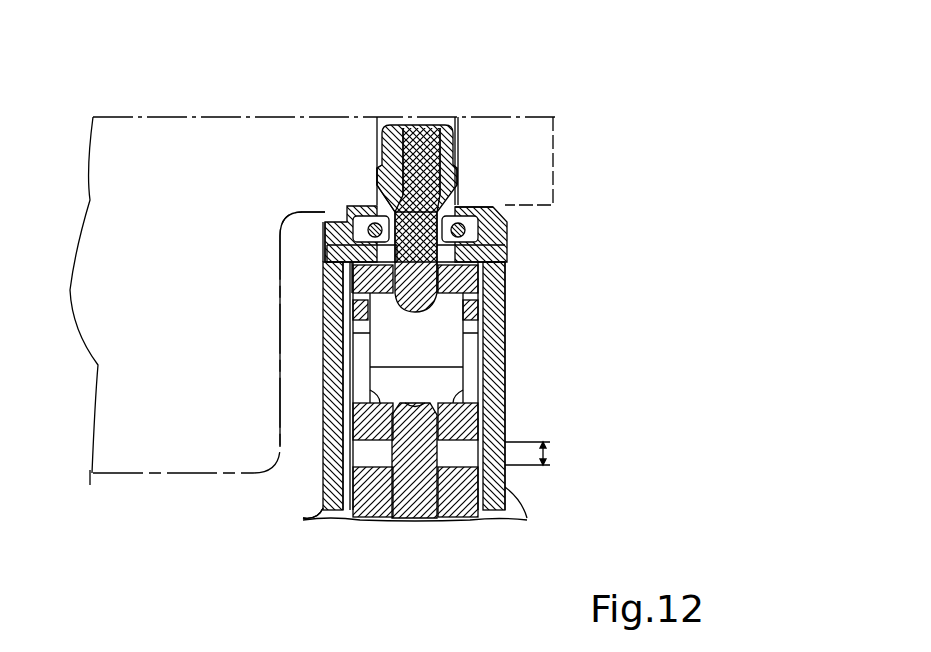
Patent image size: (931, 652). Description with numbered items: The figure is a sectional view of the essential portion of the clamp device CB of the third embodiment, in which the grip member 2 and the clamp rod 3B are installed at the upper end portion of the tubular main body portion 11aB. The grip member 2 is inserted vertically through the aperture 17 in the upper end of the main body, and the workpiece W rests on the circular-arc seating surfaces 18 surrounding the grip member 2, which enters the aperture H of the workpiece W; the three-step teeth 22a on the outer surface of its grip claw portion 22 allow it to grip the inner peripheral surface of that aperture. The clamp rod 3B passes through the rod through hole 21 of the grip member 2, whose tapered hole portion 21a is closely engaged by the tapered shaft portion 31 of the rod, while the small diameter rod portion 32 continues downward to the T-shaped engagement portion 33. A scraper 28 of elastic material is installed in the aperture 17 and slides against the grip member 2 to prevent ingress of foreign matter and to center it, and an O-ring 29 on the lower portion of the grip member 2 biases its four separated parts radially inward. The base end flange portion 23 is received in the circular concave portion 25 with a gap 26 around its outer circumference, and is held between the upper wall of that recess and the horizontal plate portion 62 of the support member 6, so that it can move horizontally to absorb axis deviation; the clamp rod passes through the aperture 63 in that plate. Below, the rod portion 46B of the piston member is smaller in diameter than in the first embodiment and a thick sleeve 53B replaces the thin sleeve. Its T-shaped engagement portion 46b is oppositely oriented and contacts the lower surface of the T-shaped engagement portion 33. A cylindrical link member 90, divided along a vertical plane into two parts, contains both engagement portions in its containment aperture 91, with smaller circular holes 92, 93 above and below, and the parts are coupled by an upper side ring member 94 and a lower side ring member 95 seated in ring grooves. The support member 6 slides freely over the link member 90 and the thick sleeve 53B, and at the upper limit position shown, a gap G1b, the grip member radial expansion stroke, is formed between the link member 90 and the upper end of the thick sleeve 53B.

The grip member 2 is at (465, 160).
The clamp rod 3B is at (433, 117).
The support member 6 is at (500, 487).
The tubular main body portion 11aB is at (507, 358).
The aperture 17 is at (300, 232).
The seating surfaces 18 is at (372, 192).
The rod through hole 21 is at (455, 192).
The tapered hole portion 21a is at (396, 126).
The grip claw portion 22 is at (453, 172).
The teeth 22a is at (380, 165).
The base end flange portion 23 is at (500, 223).
The circular concave portion 25 is at (500, 248).
The gap 26 is at (330, 232).
The scraper 28 is at (370, 225).
The O-ring 29 is at (340, 212).
The tapered shaft portion 31 is at (415, 127).
The small diameter rod portion 32 is at (330, 290).
The T-shaped engagement portion 33 is at (447, 351).
The T-shaped engagement portion 46b is at (500, 385).
The rod portion 46B is at (418, 493).
The thick sleeve 53B is at (315, 505).
The horizontal plate portion 62 is at (500, 277).
The aperture 63 is at (500, 290).
The link member 90 is at (346, 352).
The containment aperture 91 is at (352, 383).
The circular hole 92 is at (356, 310).
The circular hole 93 is at (356, 422).
The upper side ring member 94 is at (507, 305).
The lower side ring member 95 is at (500, 418).
The gap G1b is at (552, 454).
The aperture H is at (340, 118).
The clamp device CB is at (630, 186).
The workpiece W is at (147, 474).